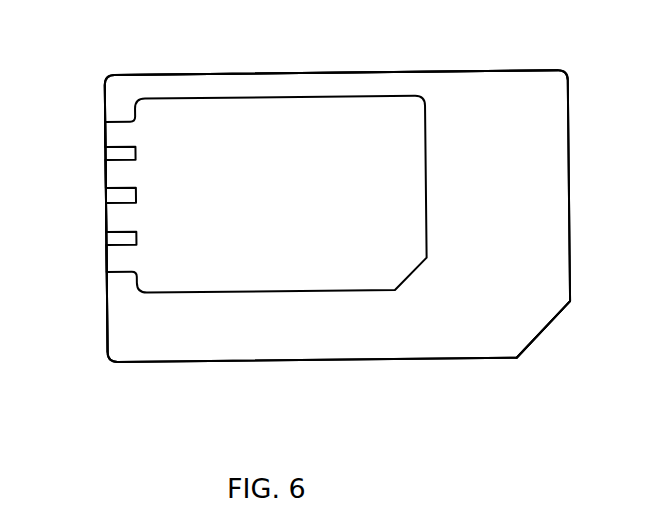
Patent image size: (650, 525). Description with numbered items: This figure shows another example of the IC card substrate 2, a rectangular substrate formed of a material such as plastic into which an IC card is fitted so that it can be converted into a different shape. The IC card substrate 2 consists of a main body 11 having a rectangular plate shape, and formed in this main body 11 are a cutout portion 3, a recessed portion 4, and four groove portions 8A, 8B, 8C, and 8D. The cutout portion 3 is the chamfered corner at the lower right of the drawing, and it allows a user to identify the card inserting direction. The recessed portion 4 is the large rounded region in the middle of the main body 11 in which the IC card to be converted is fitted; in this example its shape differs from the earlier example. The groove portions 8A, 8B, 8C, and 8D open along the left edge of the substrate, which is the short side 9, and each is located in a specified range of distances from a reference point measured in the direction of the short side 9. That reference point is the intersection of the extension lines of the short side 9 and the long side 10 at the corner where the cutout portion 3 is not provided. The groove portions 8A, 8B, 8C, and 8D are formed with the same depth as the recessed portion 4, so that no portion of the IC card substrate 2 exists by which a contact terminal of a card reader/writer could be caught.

The long side 10 is at (358, 66).
The IC card substrate 2 is at (409, 84).
The main body 11 is at (450, 72).
The cutout portion 3 is at (543, 327).
The recessed portion 4 is at (196, 99).
The short side 9 is at (82, 300).
The groove portion 8A is at (114, 138).
The groove portion 8B is at (114, 176).
The groove portion 8C is at (114, 218).
The groove portion 8D is at (114, 260).